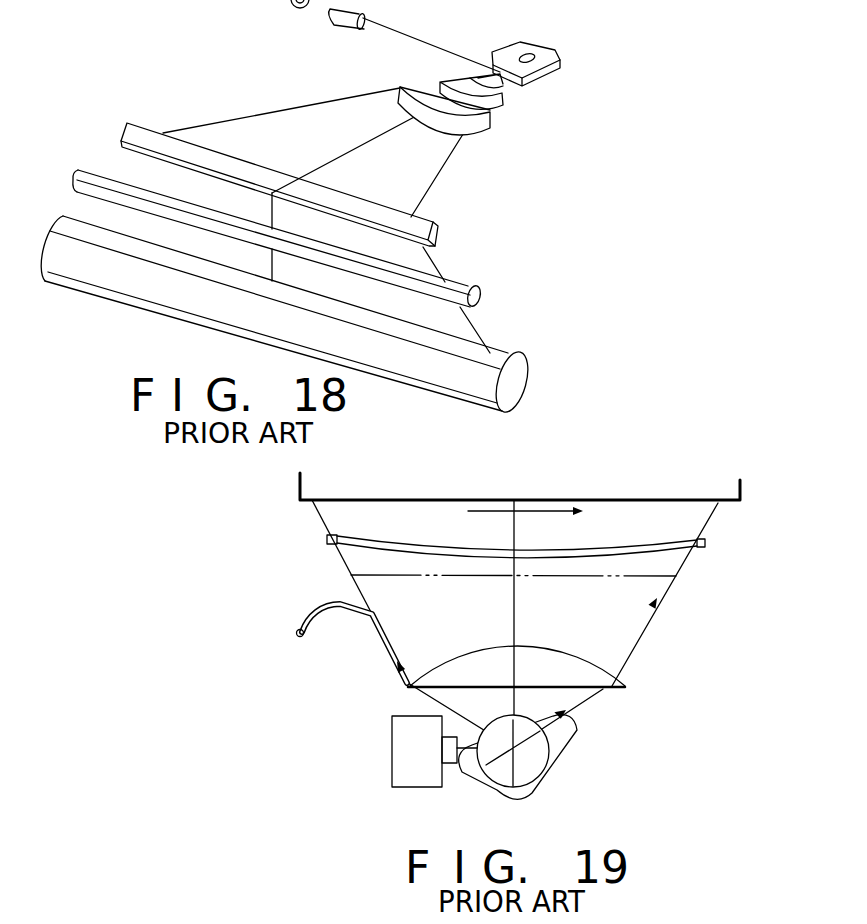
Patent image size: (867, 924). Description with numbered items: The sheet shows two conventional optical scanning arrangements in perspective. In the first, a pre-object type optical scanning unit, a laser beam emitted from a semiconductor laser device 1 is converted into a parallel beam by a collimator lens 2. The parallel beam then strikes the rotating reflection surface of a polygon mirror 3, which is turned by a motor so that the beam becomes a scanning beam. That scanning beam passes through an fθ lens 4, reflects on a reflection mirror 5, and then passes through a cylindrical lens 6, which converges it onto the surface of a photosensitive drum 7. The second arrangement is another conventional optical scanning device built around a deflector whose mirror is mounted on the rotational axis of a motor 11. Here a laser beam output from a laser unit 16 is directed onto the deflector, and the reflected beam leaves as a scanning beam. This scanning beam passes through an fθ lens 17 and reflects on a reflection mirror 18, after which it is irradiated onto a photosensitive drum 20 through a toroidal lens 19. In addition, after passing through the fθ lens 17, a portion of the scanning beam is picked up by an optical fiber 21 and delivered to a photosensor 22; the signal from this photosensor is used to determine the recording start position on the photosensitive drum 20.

In FIG. 18, the semiconductor laser device 1 is at (287, 5).
In FIG. 18, the collimator lens 2 is at (339, 22).
In FIG. 18, the polygon mirror 3 is at (561, 67).
In FIG. 18, the fθ lens 4 is at (492, 121).
In FIG. 18, the reflection mirror 5 is at (437, 227).
In FIG. 18, the cylindrical lens 6 is at (481, 296).
In FIG. 18, the photosensitive drum 7 is at (527, 380).
In FIG. 19, the motor 11 is at (500, 788).
In FIG. 19, the laser unit 16 is at (399, 749).
In FIG. 19, the fθ lens 17 is at (606, 664).
In FIG. 19, the reflection mirror 18 is at (652, 578).
In FIG. 19, the toroidal lens 19 is at (684, 550).
In FIG. 19, the photosensitive drum 20 is at (743, 483).
In FIG. 19, the optical fiber 21 is at (369, 622).
In FIG. 19, the photosensor 22 is at (302, 637).